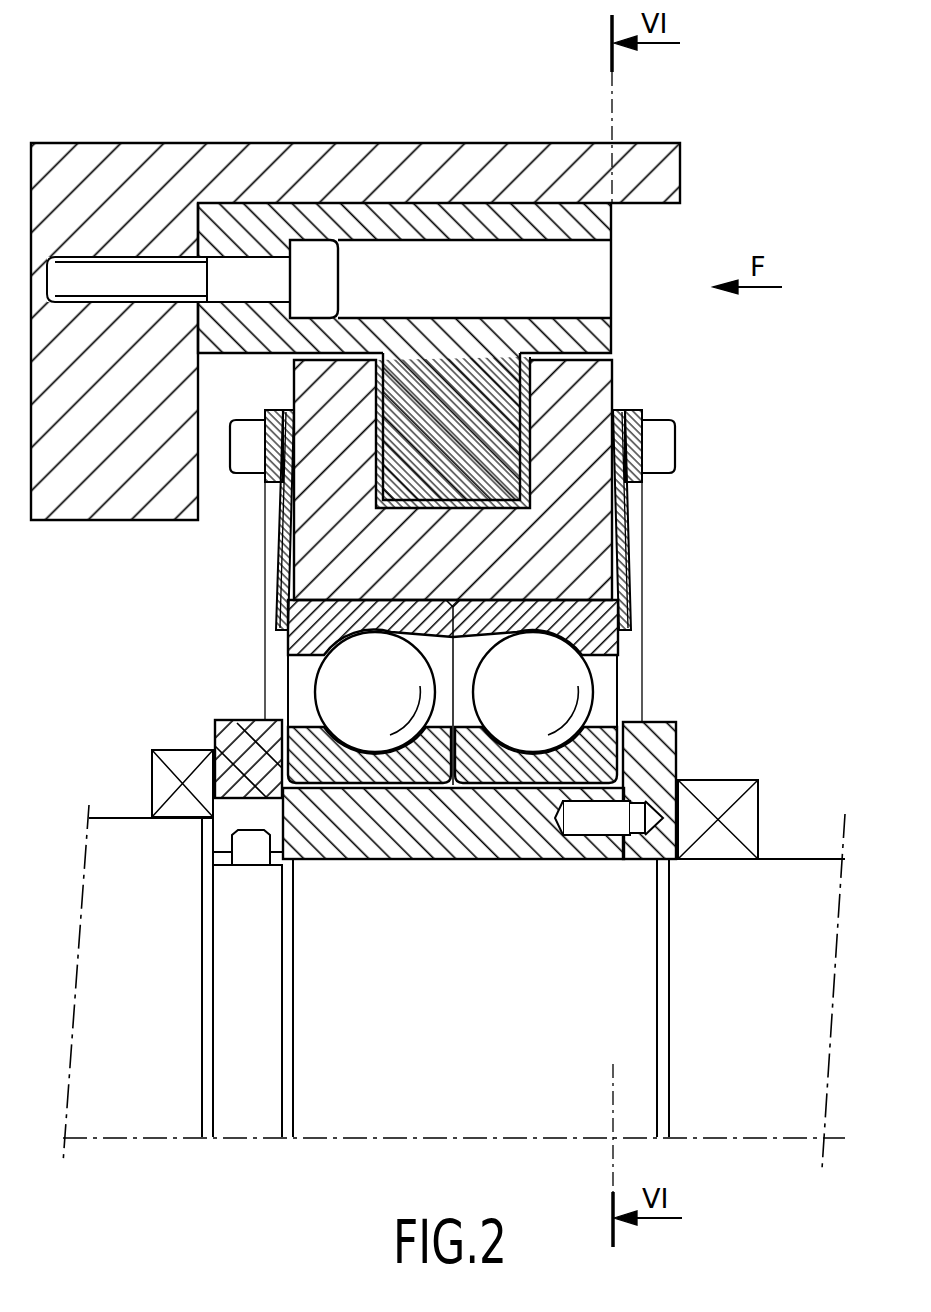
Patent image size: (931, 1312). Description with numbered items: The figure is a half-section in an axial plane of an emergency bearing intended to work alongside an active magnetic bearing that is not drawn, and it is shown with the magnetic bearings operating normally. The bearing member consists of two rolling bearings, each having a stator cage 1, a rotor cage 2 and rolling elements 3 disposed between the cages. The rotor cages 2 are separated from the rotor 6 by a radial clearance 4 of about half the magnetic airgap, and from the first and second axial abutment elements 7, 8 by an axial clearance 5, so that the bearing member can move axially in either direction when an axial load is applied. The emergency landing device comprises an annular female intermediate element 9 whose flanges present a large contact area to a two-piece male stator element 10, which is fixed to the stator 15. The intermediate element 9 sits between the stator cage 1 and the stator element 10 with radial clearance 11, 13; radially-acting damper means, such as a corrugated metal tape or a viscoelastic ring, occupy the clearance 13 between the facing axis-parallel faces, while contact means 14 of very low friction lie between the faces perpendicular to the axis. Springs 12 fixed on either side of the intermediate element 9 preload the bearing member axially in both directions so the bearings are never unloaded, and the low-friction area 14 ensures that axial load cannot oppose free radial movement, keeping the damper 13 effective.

The stator cage 1 is at (625, 604).
The rotor cage 2 is at (597, 743).
The rolling elements 3 is at (557, 667).
The radial clearance 4 is at (510, 782).
The axial clearance 5 is at (238, 758).
The rotor 6 is at (818, 1015).
The first axial abutment element 7 is at (669, 809).
The second axial abutment element 8 is at (215, 737).
The annular female intermediate element 9 is at (577, 422).
The two-piece male stator element 10 is at (592, 223).
The radial clearance 11 is at (557, 347).
The springs 12 is at (278, 573).
The clearance with damper means 13 is at (447, 510).
The contact means 14 is at (537, 380).
The stator 15 is at (668, 173).